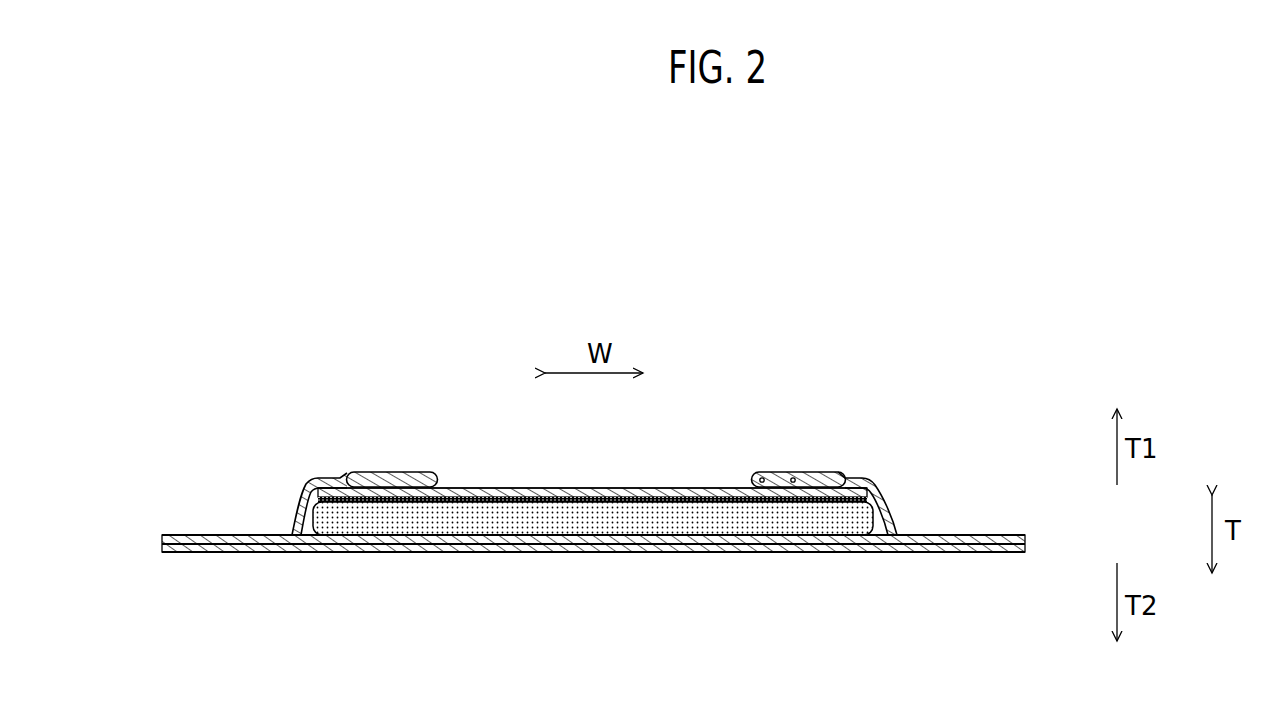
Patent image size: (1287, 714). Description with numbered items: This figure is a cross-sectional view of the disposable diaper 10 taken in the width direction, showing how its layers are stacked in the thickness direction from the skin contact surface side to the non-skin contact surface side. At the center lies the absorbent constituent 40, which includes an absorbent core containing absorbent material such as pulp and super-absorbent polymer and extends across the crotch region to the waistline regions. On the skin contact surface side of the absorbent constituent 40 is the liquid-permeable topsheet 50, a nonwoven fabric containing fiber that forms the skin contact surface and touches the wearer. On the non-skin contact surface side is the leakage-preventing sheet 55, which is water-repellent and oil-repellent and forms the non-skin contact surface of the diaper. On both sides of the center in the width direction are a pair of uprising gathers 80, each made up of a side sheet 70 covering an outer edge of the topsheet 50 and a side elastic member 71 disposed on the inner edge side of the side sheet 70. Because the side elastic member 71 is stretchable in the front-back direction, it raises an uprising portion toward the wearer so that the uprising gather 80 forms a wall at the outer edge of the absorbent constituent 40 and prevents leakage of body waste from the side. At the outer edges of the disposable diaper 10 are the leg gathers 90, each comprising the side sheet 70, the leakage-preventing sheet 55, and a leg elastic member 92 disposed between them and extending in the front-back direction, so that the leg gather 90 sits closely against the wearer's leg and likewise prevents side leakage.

The disposable diaper 10 is at (351, 437).
The absorbent constituent 40 is at (624, 522).
The topsheet 50 is at (632, 488).
The leakage-preventing sheet 55 is at (818, 553).
The side sheet 70 is at (853, 477).
The side elastic member 71 is at (795, 476).
The uprising gather 80 is at (731, 457).
The leg gather 90 is at (976, 504).
The leg elastic member 92 is at (985, 546).